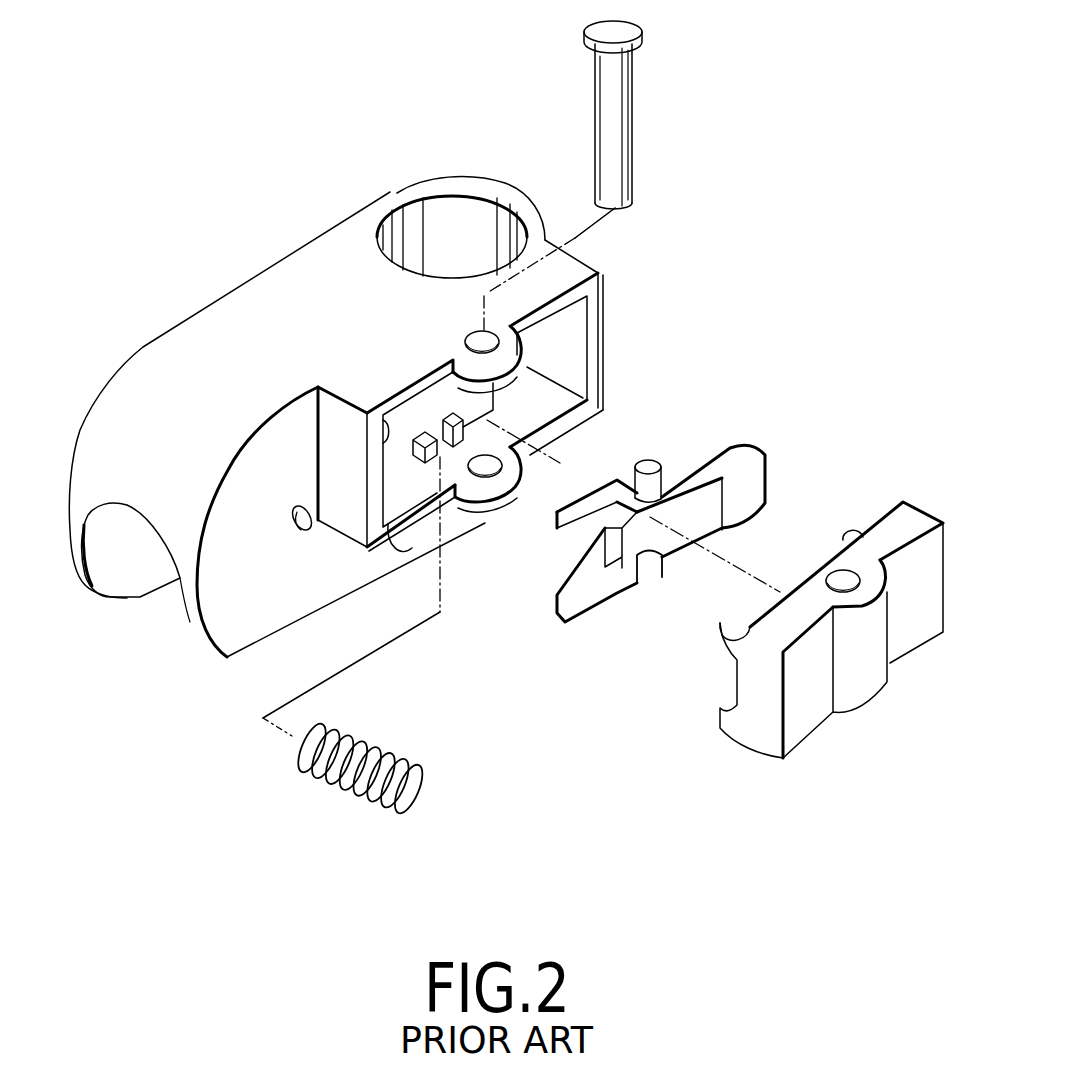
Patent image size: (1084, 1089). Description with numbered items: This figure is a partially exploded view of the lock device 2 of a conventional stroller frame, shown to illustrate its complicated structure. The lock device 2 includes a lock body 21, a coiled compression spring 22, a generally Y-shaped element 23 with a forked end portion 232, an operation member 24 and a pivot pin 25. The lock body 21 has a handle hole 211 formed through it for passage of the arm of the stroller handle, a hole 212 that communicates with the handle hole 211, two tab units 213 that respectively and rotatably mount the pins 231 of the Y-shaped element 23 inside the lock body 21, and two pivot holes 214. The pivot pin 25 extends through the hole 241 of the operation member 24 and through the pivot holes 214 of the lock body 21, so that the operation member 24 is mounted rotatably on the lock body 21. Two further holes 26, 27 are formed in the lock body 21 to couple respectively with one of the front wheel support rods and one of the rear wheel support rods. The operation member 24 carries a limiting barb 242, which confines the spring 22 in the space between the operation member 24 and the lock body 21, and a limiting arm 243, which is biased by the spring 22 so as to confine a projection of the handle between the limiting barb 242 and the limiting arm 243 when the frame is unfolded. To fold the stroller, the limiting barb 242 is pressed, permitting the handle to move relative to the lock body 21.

The lock device 2 is at (343, 203).
The lock body 21 is at (567, 263).
The handle hole 211 is at (448, 223).
The hole 212 is at (553, 352).
The tab units 213 is at (418, 437).
The pivot holes 214 is at (520, 372).
The coiled compression spring 22 is at (365, 758).
The Y-shaped element 23 is at (688, 478).
The pins 231 is at (648, 466).
The forked end portion 232 is at (568, 614).
The operation member 24 is at (900, 665).
The hole 241 is at (843, 583).
The limiting barb 242 is at (727, 652).
The limiting arm 243 is at (852, 532).
The pivot pin 25 is at (630, 33).
The hole 26 is at (397, 550).
The hole 27 is at (302, 535).